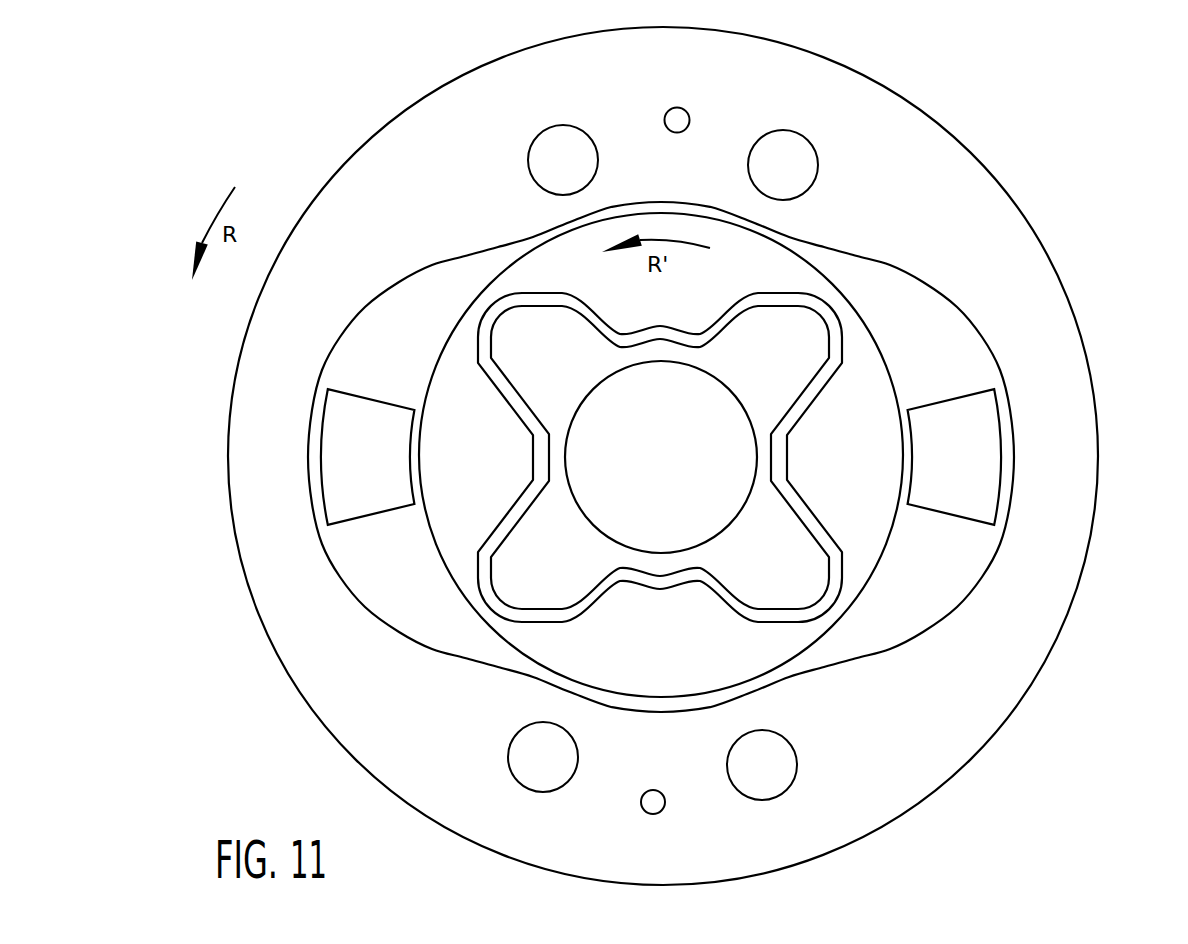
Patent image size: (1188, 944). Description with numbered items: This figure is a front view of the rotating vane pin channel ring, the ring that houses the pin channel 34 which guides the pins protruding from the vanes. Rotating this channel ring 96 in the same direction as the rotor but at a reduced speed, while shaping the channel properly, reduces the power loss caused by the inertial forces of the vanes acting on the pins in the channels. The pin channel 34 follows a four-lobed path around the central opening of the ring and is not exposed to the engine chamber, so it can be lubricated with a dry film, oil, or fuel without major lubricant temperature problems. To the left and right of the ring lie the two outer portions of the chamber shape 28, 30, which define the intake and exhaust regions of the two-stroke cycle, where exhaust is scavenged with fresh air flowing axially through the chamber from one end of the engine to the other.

The outer portion of the chamber shape 28 is at (343, 452).
The outer portion of the chamber shape 30 is at (985, 452).
The pin channel 34 is at (662, 333).
The lobed port plate 96 is at (855, 435).